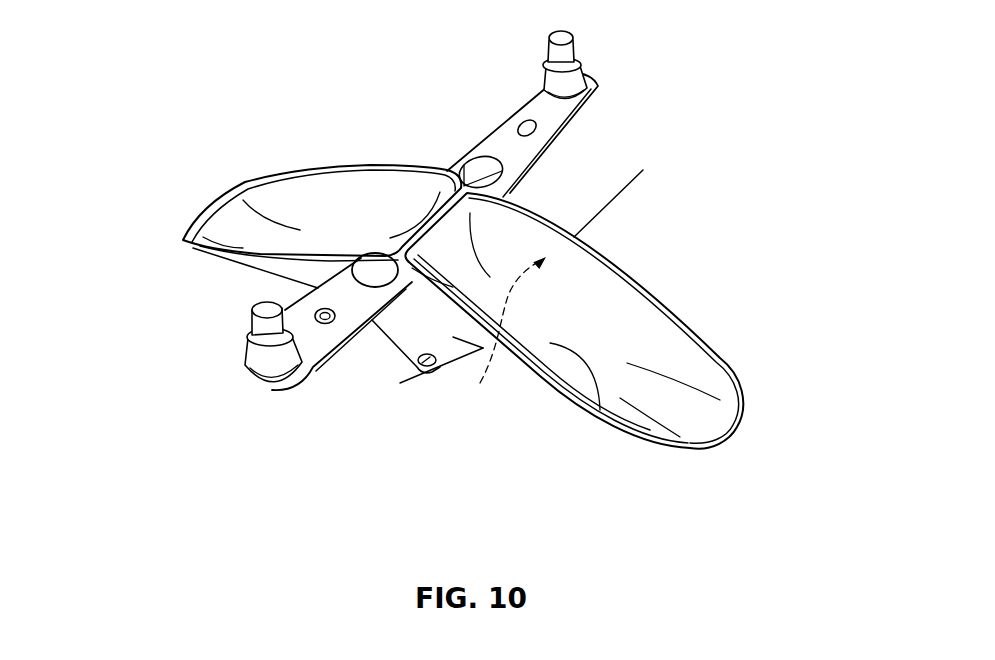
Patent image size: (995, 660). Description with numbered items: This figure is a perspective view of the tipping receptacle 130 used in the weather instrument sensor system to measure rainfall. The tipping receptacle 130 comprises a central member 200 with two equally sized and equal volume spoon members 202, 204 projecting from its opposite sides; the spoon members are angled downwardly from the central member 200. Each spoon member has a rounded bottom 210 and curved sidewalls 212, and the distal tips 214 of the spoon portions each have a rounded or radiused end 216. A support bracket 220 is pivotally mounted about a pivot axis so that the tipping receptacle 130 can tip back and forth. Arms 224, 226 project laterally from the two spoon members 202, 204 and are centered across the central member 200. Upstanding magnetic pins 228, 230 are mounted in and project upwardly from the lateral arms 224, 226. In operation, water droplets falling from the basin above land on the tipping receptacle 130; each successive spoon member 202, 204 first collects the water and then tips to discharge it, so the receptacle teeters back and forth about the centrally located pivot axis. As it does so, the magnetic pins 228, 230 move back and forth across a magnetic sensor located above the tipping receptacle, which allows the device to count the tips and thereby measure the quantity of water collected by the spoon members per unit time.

The tipping receptacle 130 is at (733, 284).
The central member 200 is at (433, 208).
The spoon member 202 is at (186, 266).
The spoon member 204 is at (746, 366).
The rounded bottom 210 is at (602, 423).
The curved sidewall 212 is at (625, 187).
The distal tip 214 is at (727, 440).
The rounded end 216 is at (733, 417).
The support bracket 220 is at (384, 362).
The arm 224 is at (503, 117).
The arm 226 is at (300, 357).
The magnetic pin 228 is at (572, 37).
The magnetic pin 230 is at (263, 312).